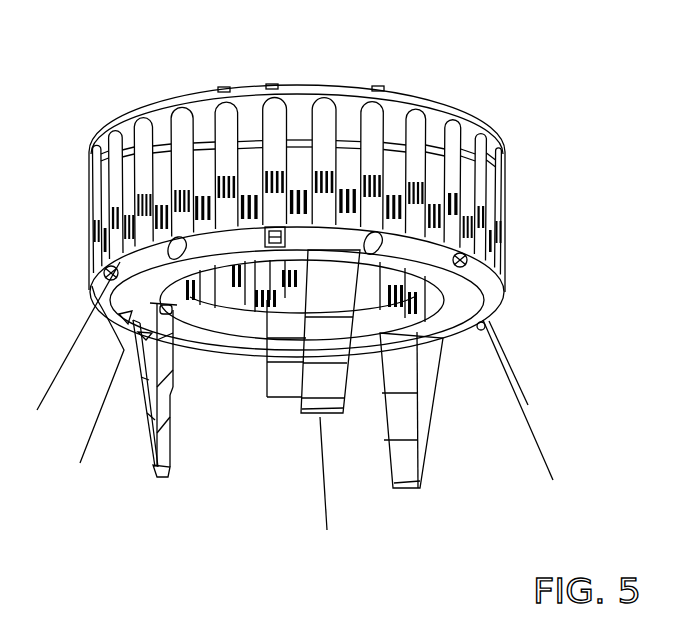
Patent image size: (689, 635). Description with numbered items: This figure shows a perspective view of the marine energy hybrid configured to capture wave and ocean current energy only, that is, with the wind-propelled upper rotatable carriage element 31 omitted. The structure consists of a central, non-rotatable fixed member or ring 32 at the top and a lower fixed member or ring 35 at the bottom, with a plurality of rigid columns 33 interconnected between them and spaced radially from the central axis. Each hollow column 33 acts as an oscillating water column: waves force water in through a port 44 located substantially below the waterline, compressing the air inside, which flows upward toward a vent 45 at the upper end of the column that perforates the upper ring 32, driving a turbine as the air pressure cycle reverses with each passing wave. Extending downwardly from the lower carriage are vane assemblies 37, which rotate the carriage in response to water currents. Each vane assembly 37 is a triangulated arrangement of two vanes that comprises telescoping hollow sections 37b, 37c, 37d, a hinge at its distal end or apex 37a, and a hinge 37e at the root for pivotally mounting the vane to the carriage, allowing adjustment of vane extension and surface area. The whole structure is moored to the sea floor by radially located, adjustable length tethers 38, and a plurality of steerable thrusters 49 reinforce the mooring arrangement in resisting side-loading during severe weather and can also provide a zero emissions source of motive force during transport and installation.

The upper rotatable carriage element 31 is at (452, 303).
The fixed member or ring 32 is at (133, 113).
The rigid columns 33 is at (120, 184).
The lower fixed member or ring 35 is at (492, 293).
The vane assembly 37 is at (285, 423).
The apex hinge 37a is at (170, 448).
The telescoping hollow section 37b is at (170, 413).
The telescoping hollow section 37c is at (172, 397).
The telescoping hollow section 37d is at (173, 352).
The root hinge 37e is at (173, 318).
The adjustable length tethers 38 is at (80, 463).
The port 44 is at (503, 238).
The vent 45 is at (378, 90).
The steerable thrusters 49 is at (170, 255).